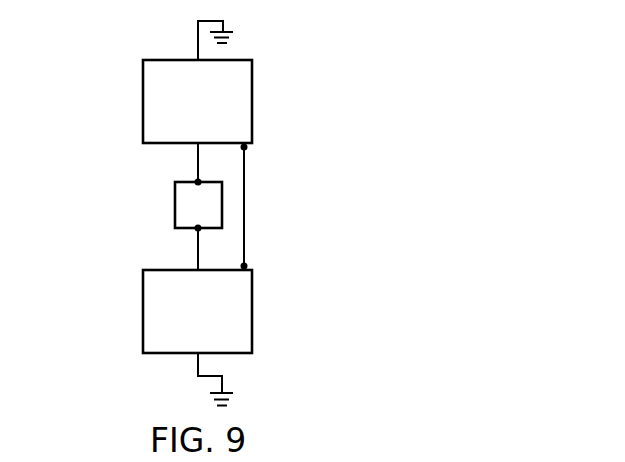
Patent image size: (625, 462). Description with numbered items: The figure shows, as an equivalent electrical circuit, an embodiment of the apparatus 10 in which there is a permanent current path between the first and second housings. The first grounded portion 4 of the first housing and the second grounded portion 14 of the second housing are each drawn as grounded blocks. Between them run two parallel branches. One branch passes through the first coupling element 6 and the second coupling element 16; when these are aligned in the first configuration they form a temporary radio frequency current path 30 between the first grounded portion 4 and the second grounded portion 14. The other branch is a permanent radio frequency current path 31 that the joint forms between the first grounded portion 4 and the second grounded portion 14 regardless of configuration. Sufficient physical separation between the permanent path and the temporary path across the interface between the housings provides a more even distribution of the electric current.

The first grounded portion 4 is at (252, 100).
The second grounded portion 14 is at (252, 312).
The first coupling element 6 is at (196, 163).
The radio frequency current path 30 is at (174, 202).
The second coupling element 16 is at (196, 248).
The permanent radio frequency current path 31 is at (246, 212).
The apparatus 10 is at (320, 140).